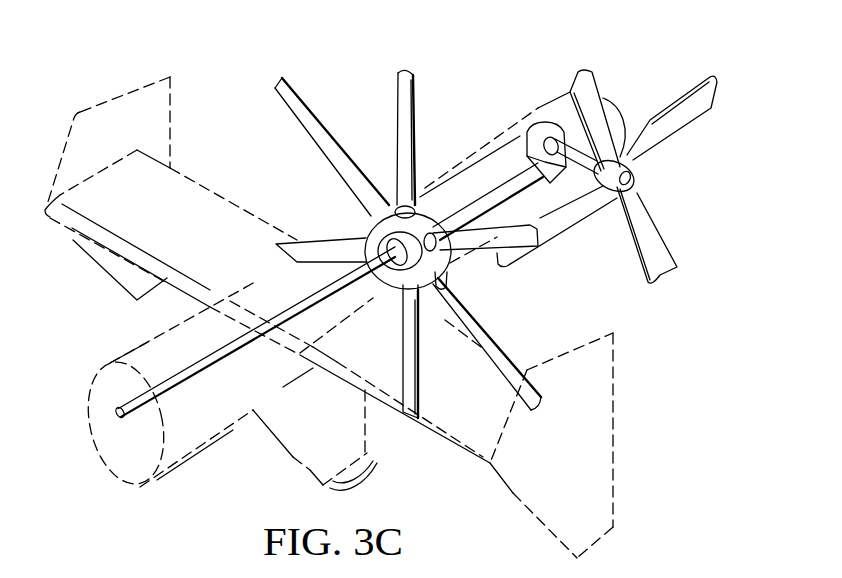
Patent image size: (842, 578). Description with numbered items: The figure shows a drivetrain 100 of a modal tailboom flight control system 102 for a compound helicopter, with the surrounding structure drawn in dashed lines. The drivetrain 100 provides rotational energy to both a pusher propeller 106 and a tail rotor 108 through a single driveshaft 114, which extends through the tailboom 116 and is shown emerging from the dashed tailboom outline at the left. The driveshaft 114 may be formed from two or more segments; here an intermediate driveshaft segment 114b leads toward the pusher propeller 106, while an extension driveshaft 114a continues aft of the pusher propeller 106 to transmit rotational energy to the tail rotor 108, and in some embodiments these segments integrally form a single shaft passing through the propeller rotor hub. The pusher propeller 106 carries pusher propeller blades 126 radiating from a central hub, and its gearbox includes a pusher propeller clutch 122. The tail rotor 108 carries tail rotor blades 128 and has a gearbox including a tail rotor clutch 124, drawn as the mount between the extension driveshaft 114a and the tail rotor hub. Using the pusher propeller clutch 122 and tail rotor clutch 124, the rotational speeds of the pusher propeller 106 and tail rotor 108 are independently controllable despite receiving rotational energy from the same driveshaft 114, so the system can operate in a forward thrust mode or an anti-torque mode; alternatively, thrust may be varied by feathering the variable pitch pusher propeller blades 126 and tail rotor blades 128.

The drivetrain 100 is at (175, 413).
The modal tailboom flight control system 102 is at (203, 66).
The pusher propeller 106 is at (306, 108).
The tail rotor 108 is at (713, 101).
The driveshaft 114 is at (219, 364).
The extension driveshaft 114a is at (498, 188).
The intermediate driveshaft segment 114b is at (257, 320).
The tailboom 116 is at (123, 354).
The pusher propeller clutch 122 is at (383, 292).
The tail rotor clutch 124 is at (537, 123).
The pusher propeller blades 126 is at (399, 88).
The tail rotor blades 128 is at (662, 267).